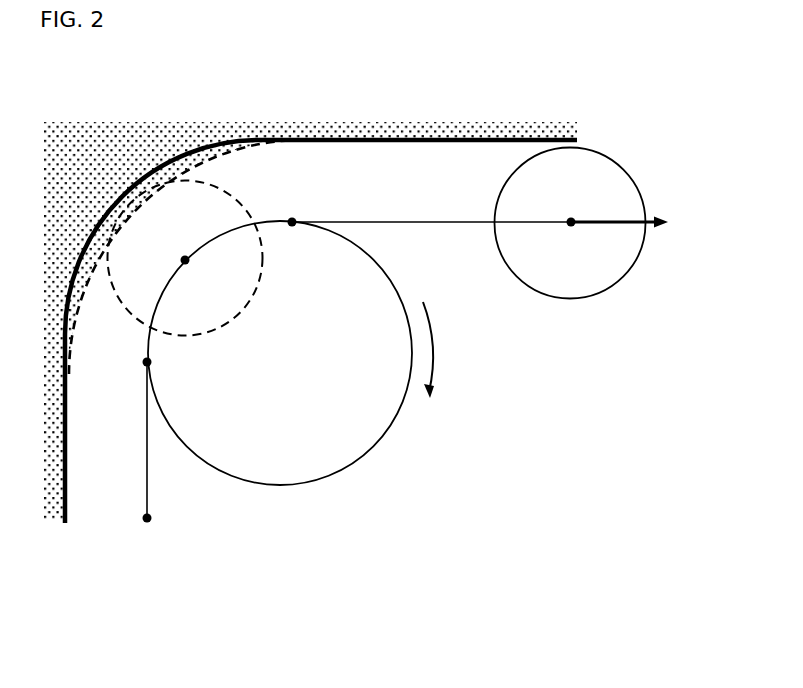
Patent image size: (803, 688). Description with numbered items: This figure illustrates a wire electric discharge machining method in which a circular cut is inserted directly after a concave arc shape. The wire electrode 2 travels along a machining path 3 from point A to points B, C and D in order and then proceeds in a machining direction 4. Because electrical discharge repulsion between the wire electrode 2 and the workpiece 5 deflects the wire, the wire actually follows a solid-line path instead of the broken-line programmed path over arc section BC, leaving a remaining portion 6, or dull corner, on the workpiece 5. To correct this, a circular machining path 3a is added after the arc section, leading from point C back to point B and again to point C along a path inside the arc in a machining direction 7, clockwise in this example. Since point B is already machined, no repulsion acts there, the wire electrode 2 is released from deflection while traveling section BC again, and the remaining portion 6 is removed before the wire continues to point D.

The wire electrode 2 is at (567, 283).
The machining path 3 is at (147, 488).
The circular machining path 3a is at (370, 445).
The machining direction 4 is at (503, 229).
The workpiece 5 is at (82, 162).
The remaining portion 6 is at (192, 162).
The machining direction 7 is at (427, 364).